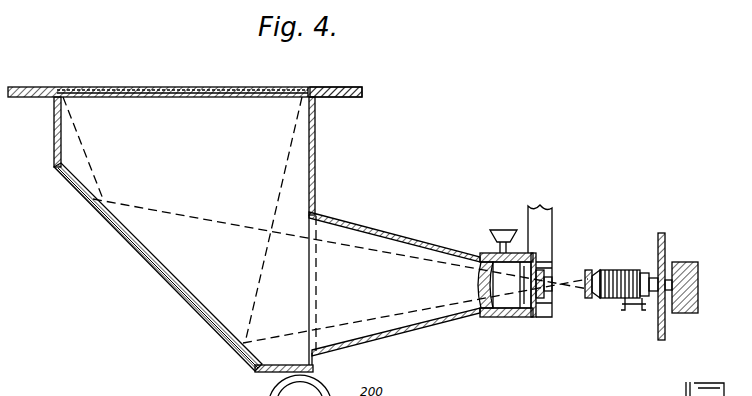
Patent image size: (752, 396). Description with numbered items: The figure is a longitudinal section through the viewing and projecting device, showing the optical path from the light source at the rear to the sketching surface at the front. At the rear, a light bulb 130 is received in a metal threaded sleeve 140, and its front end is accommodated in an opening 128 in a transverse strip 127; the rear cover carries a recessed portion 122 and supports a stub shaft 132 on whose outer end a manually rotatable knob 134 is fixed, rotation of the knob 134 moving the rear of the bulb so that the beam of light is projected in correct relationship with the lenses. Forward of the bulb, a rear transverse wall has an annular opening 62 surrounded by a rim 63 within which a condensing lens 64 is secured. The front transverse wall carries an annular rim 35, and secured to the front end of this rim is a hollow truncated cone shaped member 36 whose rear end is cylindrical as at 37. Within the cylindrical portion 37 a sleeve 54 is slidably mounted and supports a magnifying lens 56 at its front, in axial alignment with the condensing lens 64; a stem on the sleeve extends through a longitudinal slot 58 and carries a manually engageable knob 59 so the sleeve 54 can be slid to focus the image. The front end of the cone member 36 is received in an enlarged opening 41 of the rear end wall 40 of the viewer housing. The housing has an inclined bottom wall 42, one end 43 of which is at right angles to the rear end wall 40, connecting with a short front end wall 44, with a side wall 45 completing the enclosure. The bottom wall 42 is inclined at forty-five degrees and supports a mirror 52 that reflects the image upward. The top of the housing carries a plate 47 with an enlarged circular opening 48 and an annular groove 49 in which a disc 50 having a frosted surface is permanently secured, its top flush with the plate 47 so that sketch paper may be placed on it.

The annular rim 35 is at (533, 318).
The hollow truncated cone shaped member 36 is at (386, 233).
The cylindrical rear end of cone member 37 is at (505, 318).
The rear end wall 40 is at (316, 176).
The enlarged opening 41 is at (318, 248).
The inclined bottom wall 42 is at (180, 297).
The end of inclined bottom wall 43 is at (257, 370).
The short front end wall 44 is at (54, 133).
The side wall 45 is at (138, 254).
The plate 47 is at (346, 88).
The enlarged circular opening 48 is at (258, 97).
The annular groove 49 is at (312, 88).
The disc 50 is at (172, 87).
The mirror 52 is at (143, 243).
The sleeve 54 is at (482, 318).
The magnifying lens 56 is at (483, 289).
The longitudinal slot 58 is at (486, 253).
The manually engageable knob 59 is at (501, 230).
The annular opening 62 is at (546, 273).
The rim 63 is at (541, 256).
The condensing lens 64 is at (556, 283).
The recessed portion 122 is at (664, 240).
The transverse strip 127 is at (597, 273).
The opening 128 is at (590, 300).
The light bulb 130 is at (630, 302).
The stub shaft 132 is at (668, 300).
The manually rotatable knob 134 is at (684, 262).
The metal threaded sleeve 140 is at (620, 285).